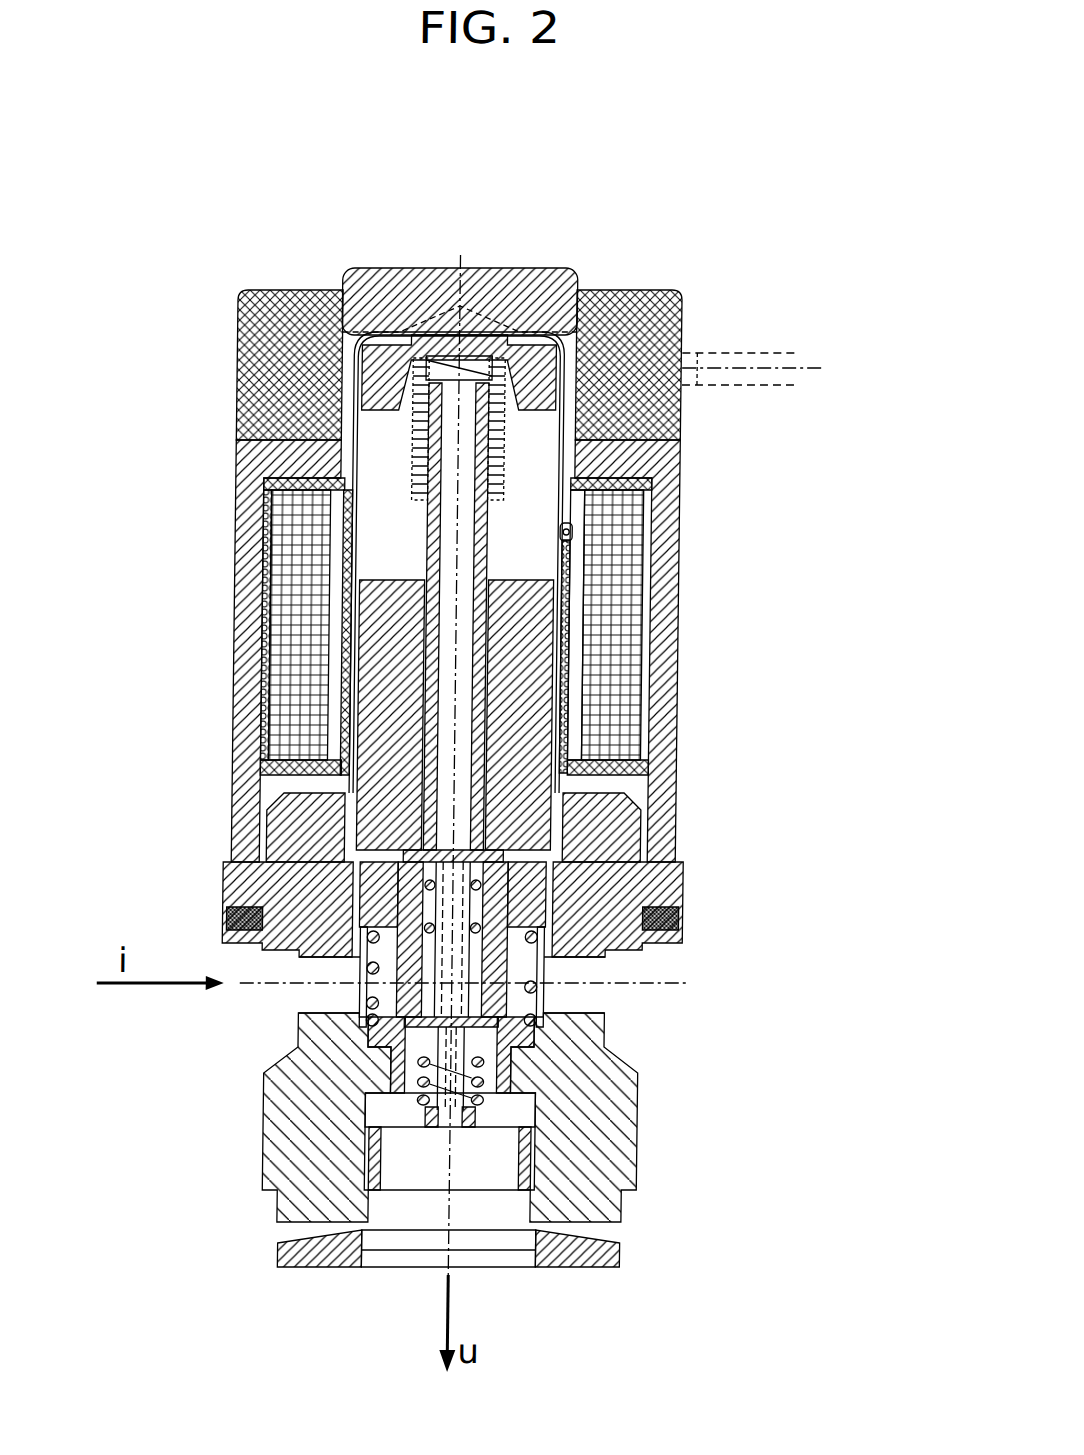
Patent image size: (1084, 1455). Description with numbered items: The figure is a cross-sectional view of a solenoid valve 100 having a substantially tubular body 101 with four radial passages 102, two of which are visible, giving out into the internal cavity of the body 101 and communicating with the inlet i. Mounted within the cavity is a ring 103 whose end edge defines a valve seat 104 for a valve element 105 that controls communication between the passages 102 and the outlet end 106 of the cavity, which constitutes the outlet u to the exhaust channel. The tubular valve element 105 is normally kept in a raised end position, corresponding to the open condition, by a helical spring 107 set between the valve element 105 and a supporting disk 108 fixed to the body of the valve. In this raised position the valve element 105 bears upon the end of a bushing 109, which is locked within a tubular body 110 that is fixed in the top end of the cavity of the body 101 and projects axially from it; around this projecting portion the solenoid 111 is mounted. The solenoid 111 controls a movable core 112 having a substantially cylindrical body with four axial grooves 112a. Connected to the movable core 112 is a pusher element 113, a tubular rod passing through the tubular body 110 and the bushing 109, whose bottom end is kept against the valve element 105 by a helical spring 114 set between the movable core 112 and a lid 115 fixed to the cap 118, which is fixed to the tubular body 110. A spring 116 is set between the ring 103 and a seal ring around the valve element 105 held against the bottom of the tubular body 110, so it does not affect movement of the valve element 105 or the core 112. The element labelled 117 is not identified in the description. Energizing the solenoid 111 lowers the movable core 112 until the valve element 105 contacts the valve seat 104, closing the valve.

The solenoid valve 100 is at (775, 345).
The body 101 is at (260, 1172).
The radial passages 102 is at (323, 995).
The ring 103 is at (545, 1047).
The valve seat 104 is at (548, 985).
The valve element 105 is at (538, 945).
The outlet end 106 is at (508, 1207).
The helical spring 107 is at (414, 1060).
The supporting disk 108 is at (545, 1127).
The bushing 109 is at (431, 830).
The tubular body 110 is at (558, 677).
The solenoid 111 is at (303, 585).
The movable core 112 is at (679, 455).
The axial grooves 112a is at (575, 532).
The pusher element 113 is at (361, 673).
The helical spring 114 is at (414, 418).
The lid 115 is at (497, 352).
The spring 116 is at (378, 962).
The valve member 117 is at (407, 893).
The cap 118 is at (423, 330).